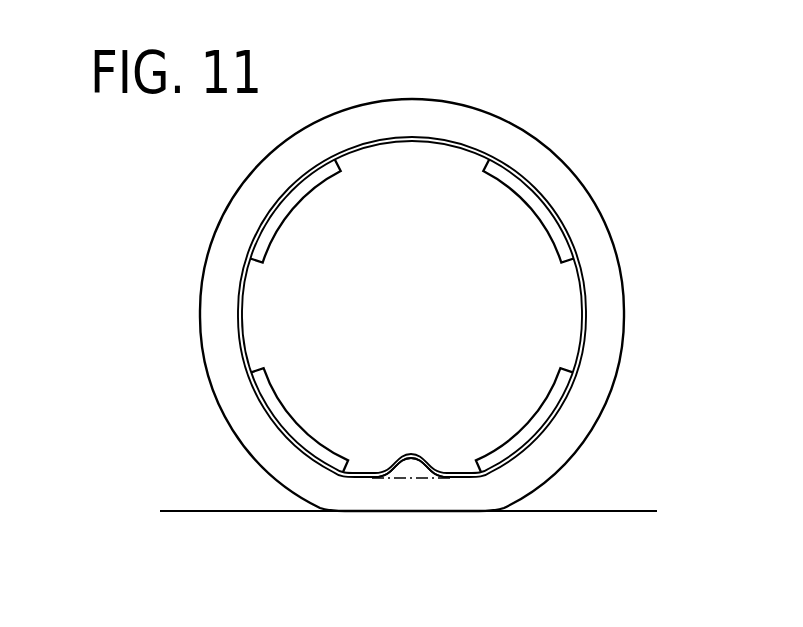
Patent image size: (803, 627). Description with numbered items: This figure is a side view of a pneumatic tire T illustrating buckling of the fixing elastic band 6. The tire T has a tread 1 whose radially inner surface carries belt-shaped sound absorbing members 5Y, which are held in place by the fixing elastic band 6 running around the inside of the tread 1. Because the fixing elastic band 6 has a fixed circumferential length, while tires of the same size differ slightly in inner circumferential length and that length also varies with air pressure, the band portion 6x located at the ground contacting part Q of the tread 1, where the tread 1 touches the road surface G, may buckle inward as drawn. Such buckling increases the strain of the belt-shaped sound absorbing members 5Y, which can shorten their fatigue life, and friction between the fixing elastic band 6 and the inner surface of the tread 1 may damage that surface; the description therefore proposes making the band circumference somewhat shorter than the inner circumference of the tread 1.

The tread 1 is at (459, 277).
The pneumatic tire T is at (534, 136).
The fixing elastic band 6 is at (248, 335).
The band portion 6x is at (411, 456).
The belt-shaped sound absorbing members 5Y is at (302, 433).
The road surface G is at (637, 510).
The ground contacting part Q is at (428, 498).